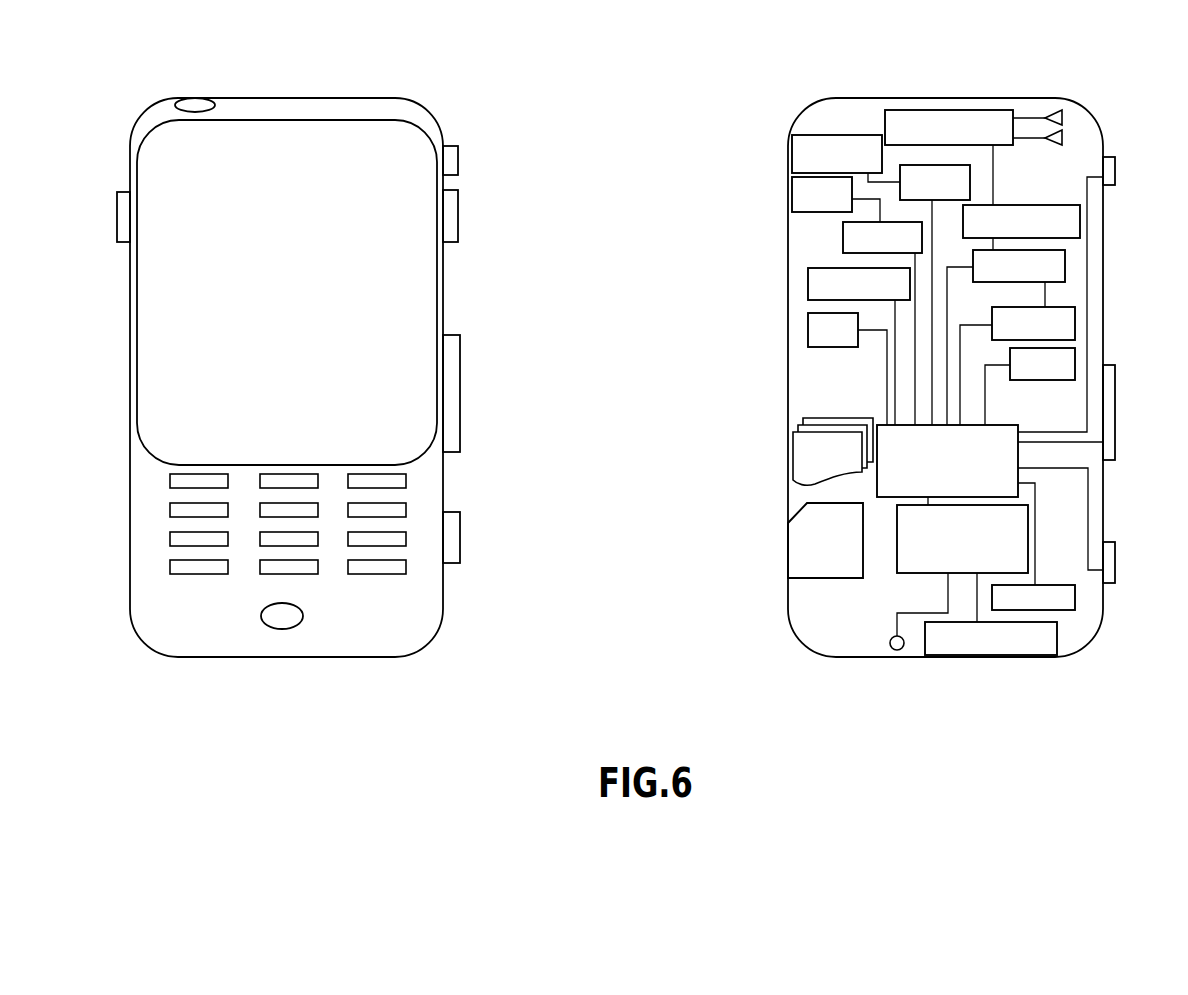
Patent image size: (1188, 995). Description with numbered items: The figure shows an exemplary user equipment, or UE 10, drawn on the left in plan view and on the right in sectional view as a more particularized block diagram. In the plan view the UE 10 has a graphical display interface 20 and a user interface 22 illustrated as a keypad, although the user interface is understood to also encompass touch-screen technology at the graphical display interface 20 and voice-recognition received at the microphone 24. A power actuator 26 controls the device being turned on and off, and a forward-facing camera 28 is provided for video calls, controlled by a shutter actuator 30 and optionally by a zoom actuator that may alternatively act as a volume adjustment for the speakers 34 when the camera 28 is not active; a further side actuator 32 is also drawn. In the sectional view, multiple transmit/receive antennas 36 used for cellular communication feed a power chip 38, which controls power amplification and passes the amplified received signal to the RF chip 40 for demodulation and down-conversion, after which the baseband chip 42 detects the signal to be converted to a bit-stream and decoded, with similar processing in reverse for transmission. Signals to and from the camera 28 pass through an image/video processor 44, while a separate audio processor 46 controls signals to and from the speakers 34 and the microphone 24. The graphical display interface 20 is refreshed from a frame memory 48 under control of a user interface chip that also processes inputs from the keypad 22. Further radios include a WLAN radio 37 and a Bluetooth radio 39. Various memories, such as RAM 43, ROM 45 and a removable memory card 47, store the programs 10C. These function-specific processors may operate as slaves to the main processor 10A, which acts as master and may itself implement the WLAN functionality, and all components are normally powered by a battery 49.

The user equipment 10 is at (440, 693).
The main processor 10A is at (887, 432).
The programs 10C is at (800, 463).
The graphical display interface 20 is at (160, 305).
The user interface 22 is at (145, 523).
The microphone 24 is at (287, 617).
The power actuator 26 is at (455, 157).
The camera 28 is at (200, 103).
The shutter actuator 30 is at (455, 533).
The button 32 is at (453, 377).
The speaker 34 is at (123, 193).
The transmit/receive antennas 36 is at (1063, 112).
The WLAN radio 37 is at (812, 293).
The power chip 38 is at (942, 115).
The Bluetooth radio 39 is at (812, 337).
The radio-frequency chip 40 is at (1072, 230).
The baseband chip 42 is at (1062, 270).
The random access memory 43 is at (1068, 325).
The image/video processor 44 is at (967, 197).
The read only memory 45 is at (1068, 365).
The audio processor 46 is at (843, 240).
The memory card 47 is at (798, 525).
The frame memory 48 is at (992, 655).
The battery 49 is at (1092, 613).